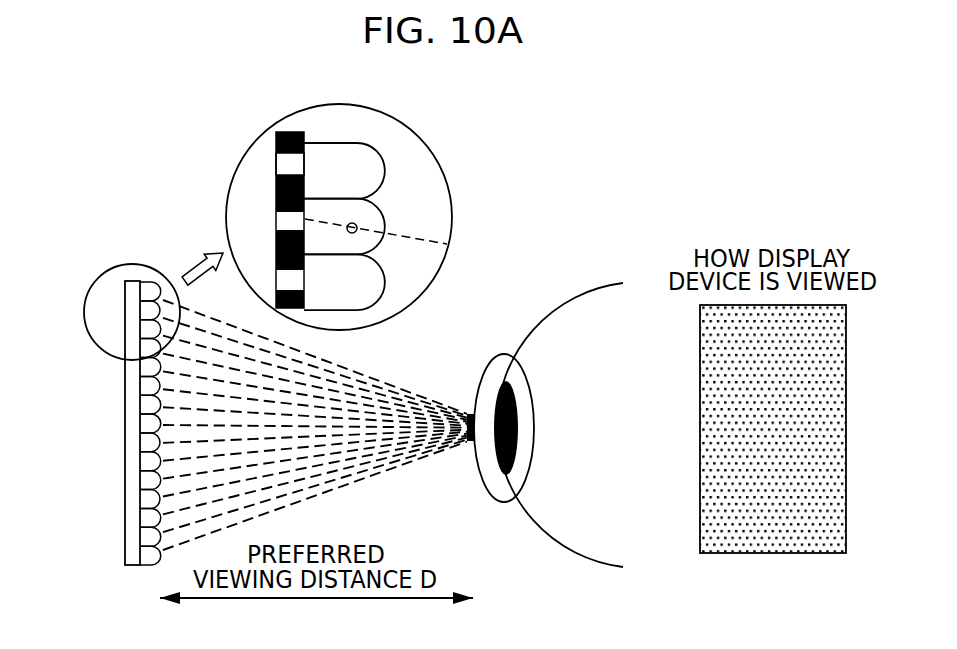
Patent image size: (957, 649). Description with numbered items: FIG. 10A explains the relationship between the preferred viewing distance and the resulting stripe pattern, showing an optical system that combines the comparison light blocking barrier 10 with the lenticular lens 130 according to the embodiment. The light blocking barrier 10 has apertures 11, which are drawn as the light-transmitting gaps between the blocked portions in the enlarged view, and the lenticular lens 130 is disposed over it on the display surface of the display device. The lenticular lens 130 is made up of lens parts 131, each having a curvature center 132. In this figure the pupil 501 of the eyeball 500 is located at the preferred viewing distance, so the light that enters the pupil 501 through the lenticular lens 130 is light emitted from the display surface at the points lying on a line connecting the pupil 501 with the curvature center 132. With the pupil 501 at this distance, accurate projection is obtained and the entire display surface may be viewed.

The light blocking barrier 10 is at (276, 143).
The apertures 11 is at (280, 165).
The lenticular lens 130 is at (125, 447).
The lens part 131 is at (323, 142).
The curvature center 132 is at (355, 223).
The eyeball 500 is at (589, 290).
The pupil 501 is at (517, 457).